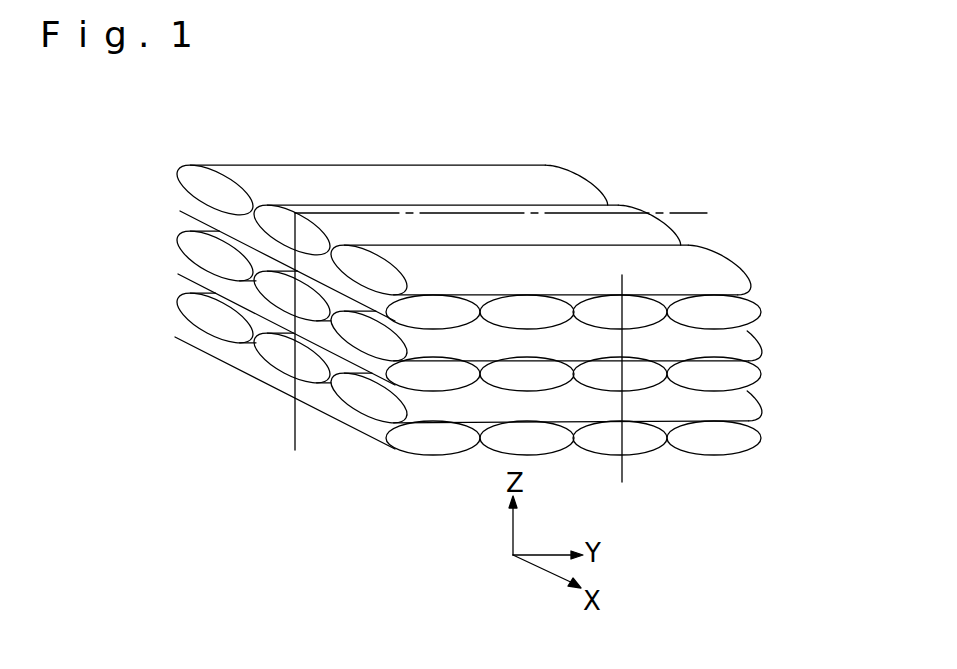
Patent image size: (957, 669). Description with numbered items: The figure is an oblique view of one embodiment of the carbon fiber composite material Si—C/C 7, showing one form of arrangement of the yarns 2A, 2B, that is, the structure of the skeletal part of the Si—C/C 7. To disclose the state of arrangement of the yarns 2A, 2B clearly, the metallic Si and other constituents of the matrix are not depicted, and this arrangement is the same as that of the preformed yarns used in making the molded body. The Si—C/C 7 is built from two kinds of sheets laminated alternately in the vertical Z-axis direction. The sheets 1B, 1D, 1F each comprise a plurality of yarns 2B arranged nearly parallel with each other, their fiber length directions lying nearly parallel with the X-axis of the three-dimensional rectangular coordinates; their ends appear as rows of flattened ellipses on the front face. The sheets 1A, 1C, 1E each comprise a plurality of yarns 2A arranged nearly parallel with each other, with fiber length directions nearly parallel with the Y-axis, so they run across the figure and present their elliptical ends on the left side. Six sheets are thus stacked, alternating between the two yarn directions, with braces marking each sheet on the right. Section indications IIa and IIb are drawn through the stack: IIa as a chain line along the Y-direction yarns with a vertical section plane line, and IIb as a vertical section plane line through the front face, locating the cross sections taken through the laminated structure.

The Si—C/C 7 is at (742, 251).
The yarns 2A is at (424, 232).
The yarns 2B is at (252, 263).
The sheet 1A is at (769, 263).
The sheet 1B is at (769, 295).
The sheet 1C is at (769, 327).
The sheet 1D is at (769, 360).
The sheet 1E is at (769, 390).
The sheet 1F is at (769, 422).
The section line IIa is at (718, 205).
The section line IIb is at (622, 275).